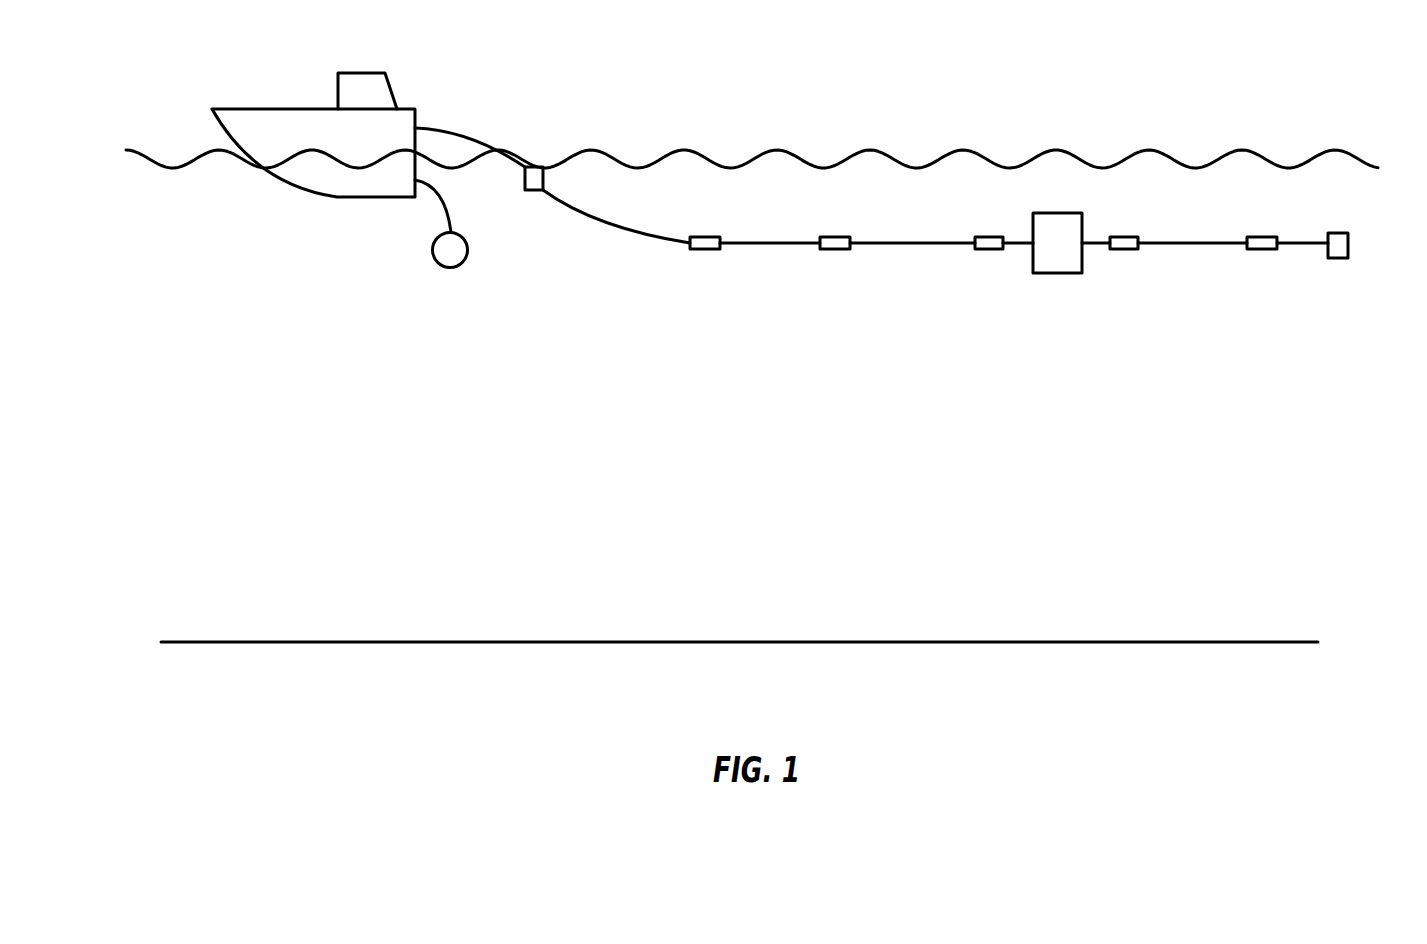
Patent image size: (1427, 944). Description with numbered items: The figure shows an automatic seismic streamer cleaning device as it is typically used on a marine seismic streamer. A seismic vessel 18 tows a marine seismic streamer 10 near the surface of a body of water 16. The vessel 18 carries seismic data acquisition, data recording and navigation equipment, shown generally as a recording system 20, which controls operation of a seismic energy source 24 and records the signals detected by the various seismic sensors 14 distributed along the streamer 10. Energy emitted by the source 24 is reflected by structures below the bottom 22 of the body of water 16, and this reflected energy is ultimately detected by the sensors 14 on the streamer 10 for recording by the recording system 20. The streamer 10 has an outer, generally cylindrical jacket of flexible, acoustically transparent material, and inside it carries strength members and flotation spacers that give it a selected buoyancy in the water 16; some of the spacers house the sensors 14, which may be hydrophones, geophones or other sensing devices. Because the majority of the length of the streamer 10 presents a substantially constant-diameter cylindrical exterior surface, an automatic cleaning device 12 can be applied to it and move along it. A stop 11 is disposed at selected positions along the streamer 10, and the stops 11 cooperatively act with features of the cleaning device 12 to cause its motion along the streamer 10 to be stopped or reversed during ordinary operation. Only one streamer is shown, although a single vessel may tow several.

The marine seismic streamer 10 is at (583, 210).
The stop 11 is at (537, 192).
The automatic cleaning device 12 is at (1058, 274).
The seismic sensors 14 is at (705, 250).
The body of water 16 is at (962, 150).
The seismic vessel 18 is at (406, 108).
The recording system 20 is at (348, 72).
The bottom of the body of water 22 is at (957, 642).
The seismic energy source 24 is at (450, 268).